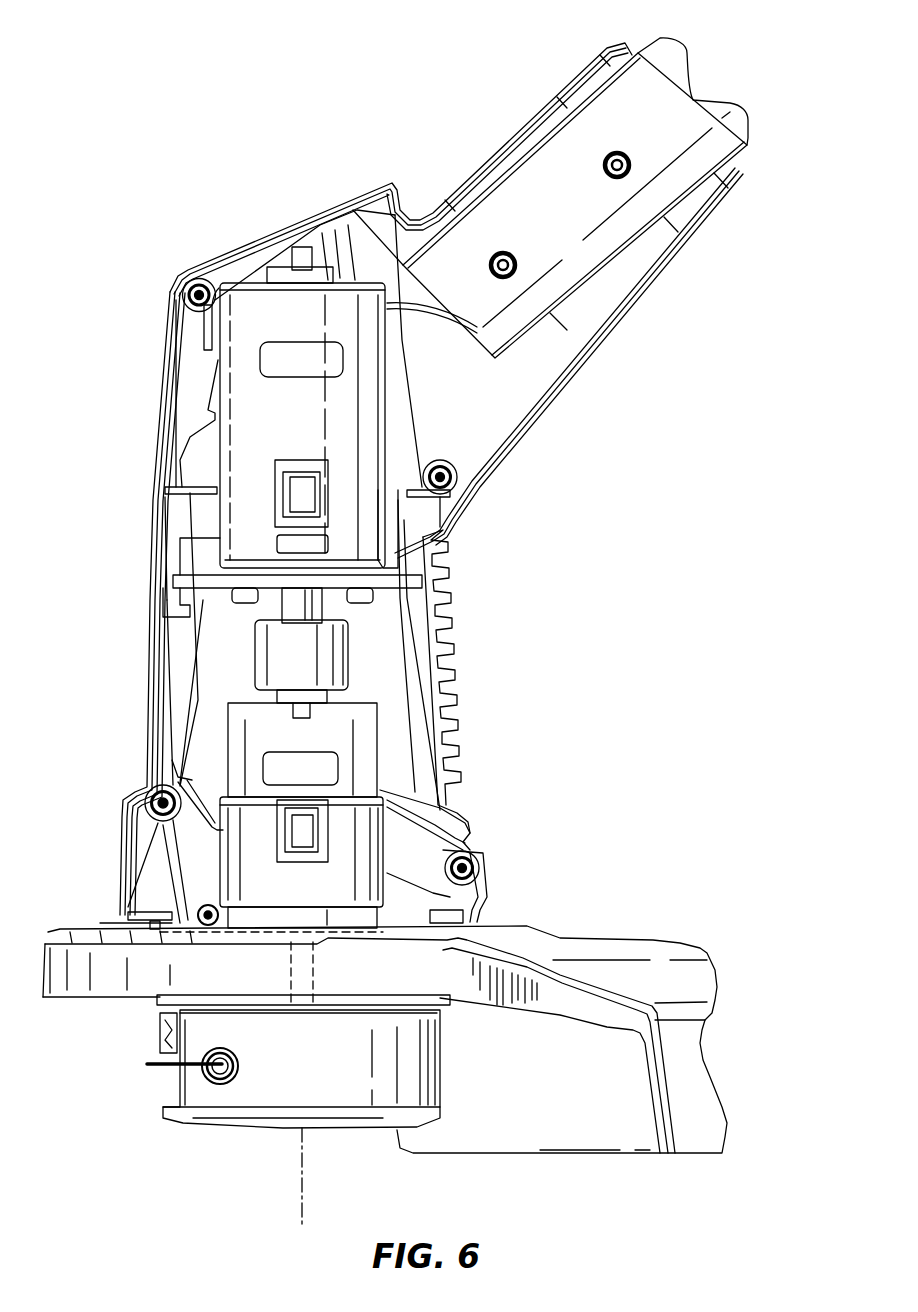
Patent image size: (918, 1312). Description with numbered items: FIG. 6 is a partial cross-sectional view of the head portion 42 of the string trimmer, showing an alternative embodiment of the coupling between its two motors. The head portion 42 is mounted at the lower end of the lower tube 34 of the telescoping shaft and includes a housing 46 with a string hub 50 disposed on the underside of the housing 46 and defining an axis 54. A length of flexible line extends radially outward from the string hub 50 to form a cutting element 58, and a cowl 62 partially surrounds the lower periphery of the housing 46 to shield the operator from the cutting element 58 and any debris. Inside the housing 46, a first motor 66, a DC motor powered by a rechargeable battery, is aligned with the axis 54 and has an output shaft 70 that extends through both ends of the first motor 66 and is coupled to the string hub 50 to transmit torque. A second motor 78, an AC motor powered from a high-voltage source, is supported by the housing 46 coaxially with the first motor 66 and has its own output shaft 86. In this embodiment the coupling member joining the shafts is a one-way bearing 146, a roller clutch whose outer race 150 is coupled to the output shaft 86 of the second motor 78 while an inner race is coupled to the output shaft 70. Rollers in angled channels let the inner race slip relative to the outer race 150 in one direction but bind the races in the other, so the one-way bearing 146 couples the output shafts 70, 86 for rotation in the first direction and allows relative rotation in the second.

The lower tube 34 is at (745, 152).
The head portion 42 is at (128, 227).
The housing 46 is at (268, 232).
The string hub 50 is at (208, 1130).
The axis 54 is at (300, 1173).
The cutting element 58 is at (148, 1067).
The cowl 62 is at (622, 938).
The first motor 66 is at (227, 740).
The output shaft 70 is at (327, 695).
The second motor 78 is at (207, 443).
The output shaft 86 is at (325, 612).
The one-way bearing 146 is at (360, 660).
The outer race 150 is at (253, 650).